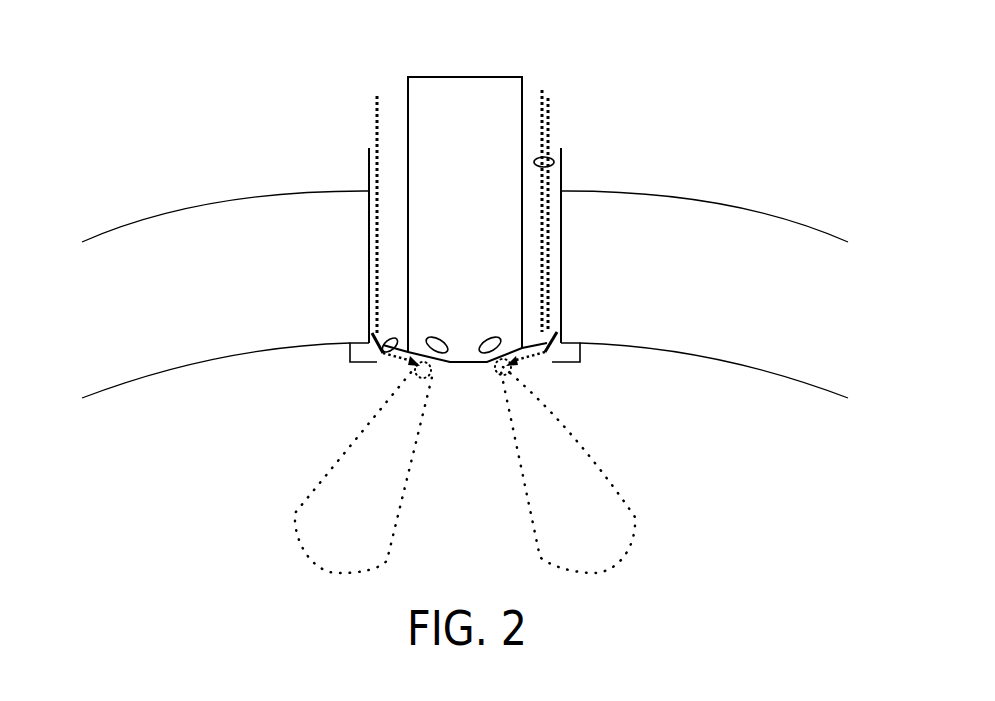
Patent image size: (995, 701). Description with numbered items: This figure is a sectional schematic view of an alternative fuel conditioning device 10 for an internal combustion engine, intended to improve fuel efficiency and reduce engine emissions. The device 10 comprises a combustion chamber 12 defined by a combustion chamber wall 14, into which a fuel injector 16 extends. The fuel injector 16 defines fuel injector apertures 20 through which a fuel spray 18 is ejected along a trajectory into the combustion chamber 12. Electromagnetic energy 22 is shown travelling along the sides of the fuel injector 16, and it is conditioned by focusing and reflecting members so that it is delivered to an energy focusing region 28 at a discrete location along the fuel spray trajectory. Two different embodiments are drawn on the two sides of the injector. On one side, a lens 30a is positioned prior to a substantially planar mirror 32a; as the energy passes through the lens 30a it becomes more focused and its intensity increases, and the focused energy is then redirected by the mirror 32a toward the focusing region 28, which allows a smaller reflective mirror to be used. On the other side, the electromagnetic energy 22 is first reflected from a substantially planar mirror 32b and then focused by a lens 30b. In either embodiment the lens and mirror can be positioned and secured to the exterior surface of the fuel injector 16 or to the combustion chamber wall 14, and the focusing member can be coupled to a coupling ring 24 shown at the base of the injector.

The fuel conditioning device 10 is at (702, 85).
The combustion chamber 12 is at (168, 440).
The combustion chamber wall 14 is at (287, 230).
The fuel injector 16 is at (507, 100).
The fuel spray 18 is at (509, 479).
The fuel injector apertures 20 is at (485, 335).
The electromagnetic energy 22 is at (548, 138).
The coupling ring 24 is at (580, 353).
The energy focusing region 28 is at (486, 374).
The lens 30a is at (556, 162).
The lens 30b is at (392, 356).
The substantially planar mirror 32a is at (545, 353).
The substantially planar mirror 32b is at (378, 355).